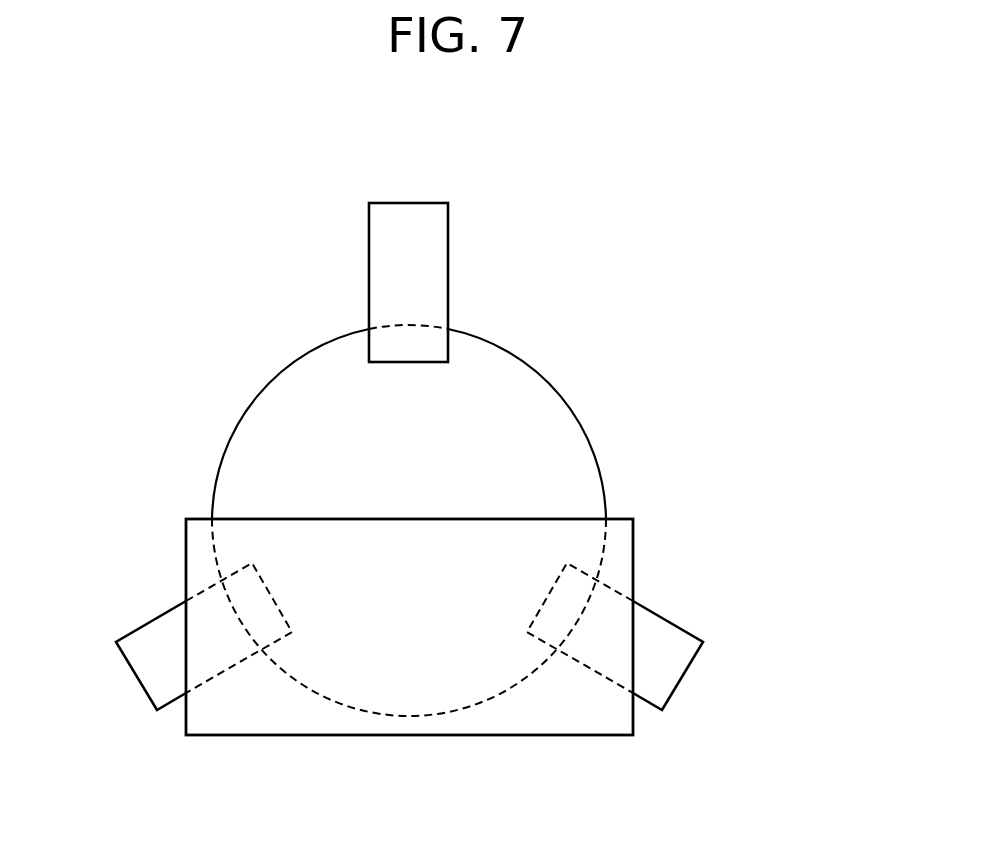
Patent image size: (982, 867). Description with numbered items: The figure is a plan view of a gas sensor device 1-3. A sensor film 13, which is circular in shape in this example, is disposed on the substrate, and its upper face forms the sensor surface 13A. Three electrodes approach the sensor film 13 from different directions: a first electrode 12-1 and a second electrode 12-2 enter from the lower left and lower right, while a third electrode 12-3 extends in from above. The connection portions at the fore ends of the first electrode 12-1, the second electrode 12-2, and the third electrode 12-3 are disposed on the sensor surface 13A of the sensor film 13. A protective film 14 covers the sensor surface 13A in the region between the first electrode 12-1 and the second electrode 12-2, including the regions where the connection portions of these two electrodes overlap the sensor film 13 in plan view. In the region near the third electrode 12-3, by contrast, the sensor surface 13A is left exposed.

The gas sensor device 1-3 is at (788, 209).
The first electrode 12-1 is at (153, 638).
The second electrode 12-2 is at (663, 638).
The third electrode 12-3 is at (435, 243).
The sensor film 13 is at (445, 520).
The sensor surface 13A is at (522, 393).
The protective film 14 is at (560, 725).